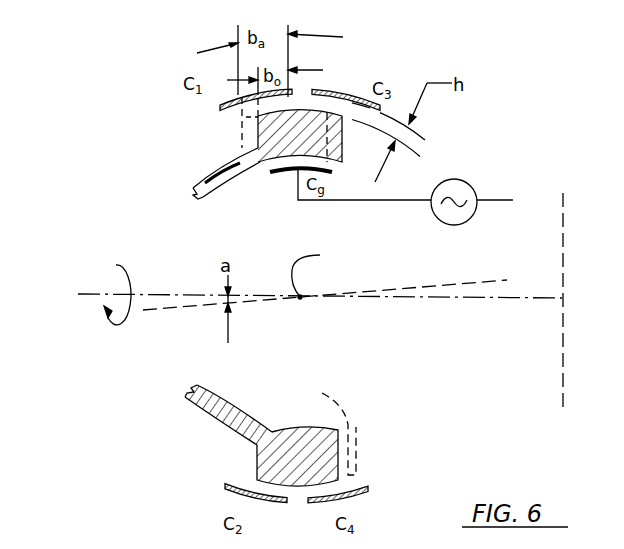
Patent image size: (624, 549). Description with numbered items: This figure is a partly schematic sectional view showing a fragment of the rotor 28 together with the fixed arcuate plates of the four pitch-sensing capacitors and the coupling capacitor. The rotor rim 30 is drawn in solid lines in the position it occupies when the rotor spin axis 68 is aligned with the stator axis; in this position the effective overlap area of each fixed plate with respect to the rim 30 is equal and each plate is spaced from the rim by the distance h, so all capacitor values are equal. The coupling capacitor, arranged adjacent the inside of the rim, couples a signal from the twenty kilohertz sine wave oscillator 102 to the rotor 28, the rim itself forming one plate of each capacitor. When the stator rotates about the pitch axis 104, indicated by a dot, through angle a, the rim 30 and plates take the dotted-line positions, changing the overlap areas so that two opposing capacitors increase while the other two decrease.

The rotor 28 is at (223, 182).
The rotor rim 30 is at (313, 445).
The rotor spin axis 68 is at (80, 294).
The 20 KHz sine wave oscillator 102 is at (470, 214).
The pitch axis 104 is at (300, 297).